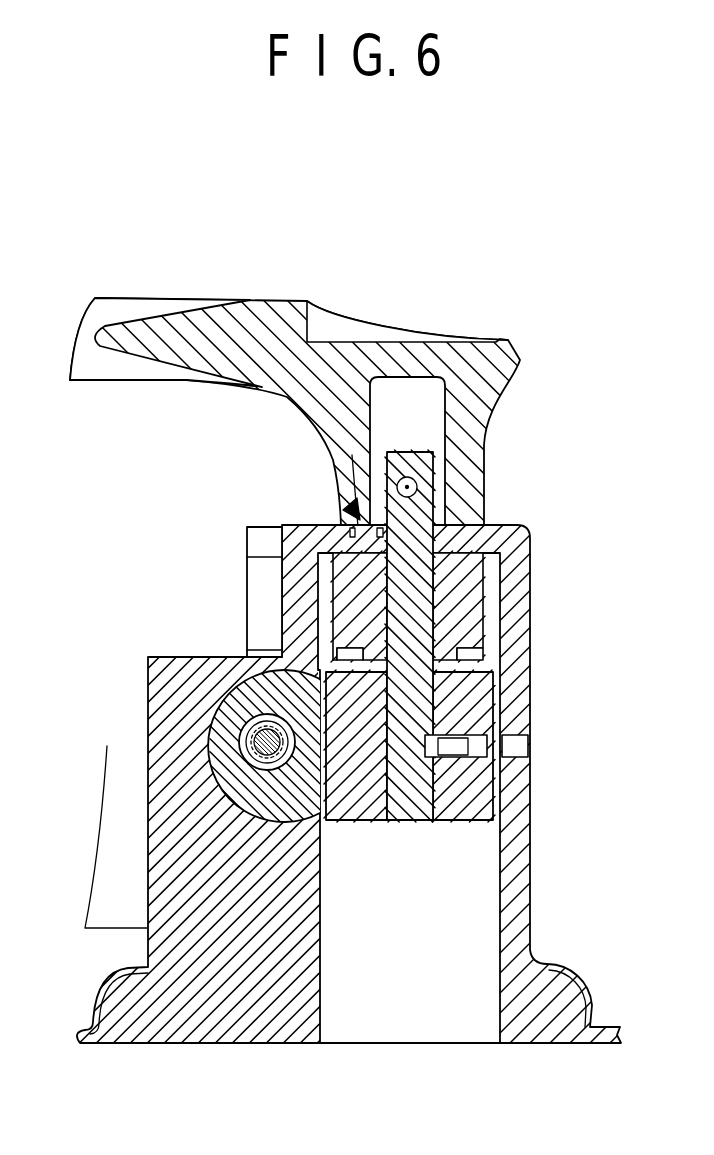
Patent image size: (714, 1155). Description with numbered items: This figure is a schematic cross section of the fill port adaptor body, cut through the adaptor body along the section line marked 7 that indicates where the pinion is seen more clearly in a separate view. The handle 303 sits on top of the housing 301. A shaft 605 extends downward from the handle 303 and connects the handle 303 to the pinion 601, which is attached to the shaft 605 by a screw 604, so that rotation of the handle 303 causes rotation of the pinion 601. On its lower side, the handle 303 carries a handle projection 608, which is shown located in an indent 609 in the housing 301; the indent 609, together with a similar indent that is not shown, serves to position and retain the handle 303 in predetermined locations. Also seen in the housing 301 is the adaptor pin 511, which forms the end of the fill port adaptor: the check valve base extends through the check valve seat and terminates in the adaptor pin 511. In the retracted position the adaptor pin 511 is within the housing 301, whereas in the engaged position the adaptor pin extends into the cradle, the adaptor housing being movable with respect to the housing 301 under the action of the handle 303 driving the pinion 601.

The handle 303 is at (183, 332).
The housing 301 is at (507, 540).
The handle projection 608 is at (330, 450).
The indent 609 is at (362, 552).
The shaft 605 is at (408, 515).
The adaptor pin 511 is at (250, 740).
The pinion 601 is at (470, 708).
The screw 604 is at (448, 757).
The section line 7- 7 is at (72, 745).